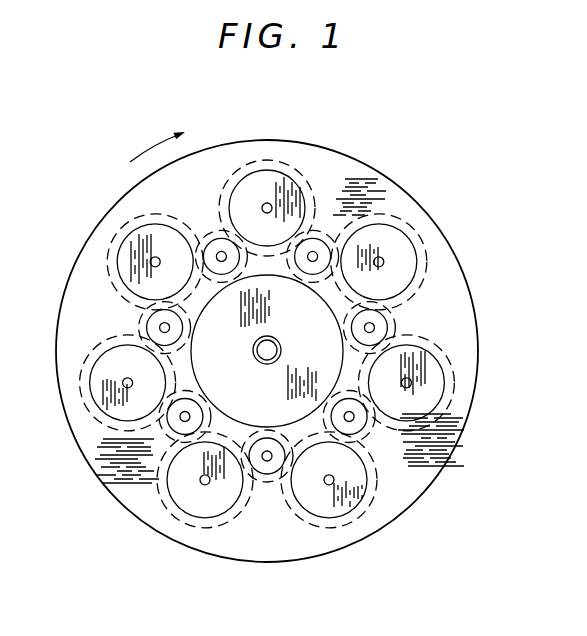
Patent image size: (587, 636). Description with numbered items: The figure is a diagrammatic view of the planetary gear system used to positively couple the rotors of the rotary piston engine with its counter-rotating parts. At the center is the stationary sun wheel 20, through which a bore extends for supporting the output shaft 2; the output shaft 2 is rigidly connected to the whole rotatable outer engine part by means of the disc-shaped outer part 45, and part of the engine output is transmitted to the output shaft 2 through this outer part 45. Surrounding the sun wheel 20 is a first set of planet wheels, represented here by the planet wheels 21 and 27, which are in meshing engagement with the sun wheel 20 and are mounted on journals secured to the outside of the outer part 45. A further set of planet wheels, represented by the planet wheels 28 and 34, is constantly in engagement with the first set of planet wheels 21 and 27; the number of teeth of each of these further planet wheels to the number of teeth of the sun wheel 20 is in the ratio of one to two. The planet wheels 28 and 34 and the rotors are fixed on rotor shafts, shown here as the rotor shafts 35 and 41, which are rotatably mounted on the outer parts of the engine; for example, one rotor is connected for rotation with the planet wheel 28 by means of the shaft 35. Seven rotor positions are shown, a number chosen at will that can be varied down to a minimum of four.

The output shaft 2 is at (277, 350).
The stationary sun wheel 20 is at (320, 310).
The outer part of the engine 45 is at (470, 320).
The rotor shaft 41 is at (411, 383).
The planet wheel 34 is at (428, 408).
The planet wheel 27 is at (357, 425).
The rotor shaft 35 is at (336, 481).
The planet wheel 28 is at (330, 510).
The planet wheel 21 is at (268, 470).